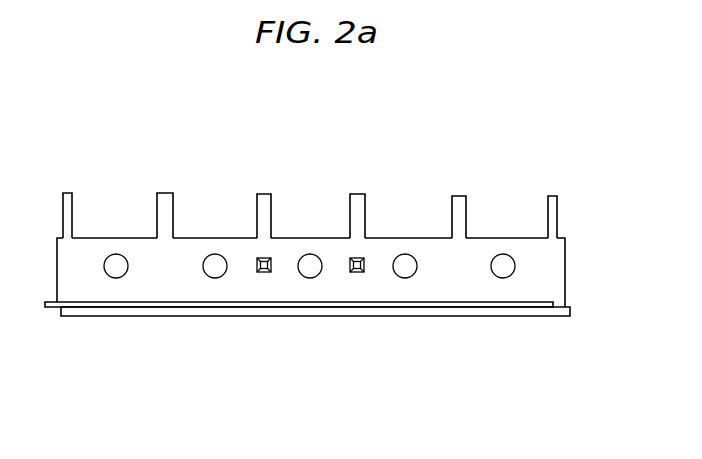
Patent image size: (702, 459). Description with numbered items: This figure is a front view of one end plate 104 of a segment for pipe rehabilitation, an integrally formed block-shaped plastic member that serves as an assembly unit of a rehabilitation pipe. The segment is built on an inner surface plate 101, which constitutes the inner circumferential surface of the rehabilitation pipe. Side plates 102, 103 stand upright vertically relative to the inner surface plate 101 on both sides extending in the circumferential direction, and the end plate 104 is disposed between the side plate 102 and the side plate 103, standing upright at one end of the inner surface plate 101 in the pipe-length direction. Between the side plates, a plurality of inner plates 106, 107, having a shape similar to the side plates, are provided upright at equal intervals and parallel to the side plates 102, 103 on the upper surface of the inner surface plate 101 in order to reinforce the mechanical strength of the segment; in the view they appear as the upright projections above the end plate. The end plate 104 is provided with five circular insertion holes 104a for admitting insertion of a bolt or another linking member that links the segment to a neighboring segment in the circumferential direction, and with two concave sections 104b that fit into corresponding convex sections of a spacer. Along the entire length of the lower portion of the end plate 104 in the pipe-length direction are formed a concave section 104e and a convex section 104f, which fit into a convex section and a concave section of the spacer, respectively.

The inner surface plate 101 is at (297, 318).
The side plate 102 is at (553, 195).
The side plate 103 is at (67, 190).
The end plate 104 is at (313, 253).
The circular insertion hole 104a is at (118, 253).
The concave section 104b is at (258, 259).
The concave section 104e is at (418, 312).
The convex section 104f is at (358, 308).
The inner plate 106 is at (163, 190).
The inner plate 107 is at (273, 190).